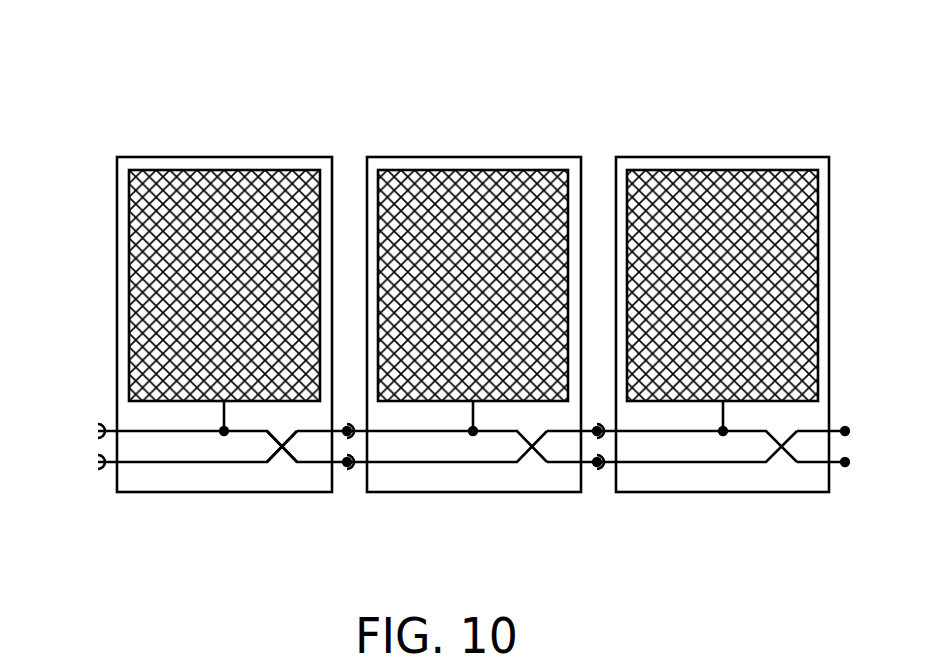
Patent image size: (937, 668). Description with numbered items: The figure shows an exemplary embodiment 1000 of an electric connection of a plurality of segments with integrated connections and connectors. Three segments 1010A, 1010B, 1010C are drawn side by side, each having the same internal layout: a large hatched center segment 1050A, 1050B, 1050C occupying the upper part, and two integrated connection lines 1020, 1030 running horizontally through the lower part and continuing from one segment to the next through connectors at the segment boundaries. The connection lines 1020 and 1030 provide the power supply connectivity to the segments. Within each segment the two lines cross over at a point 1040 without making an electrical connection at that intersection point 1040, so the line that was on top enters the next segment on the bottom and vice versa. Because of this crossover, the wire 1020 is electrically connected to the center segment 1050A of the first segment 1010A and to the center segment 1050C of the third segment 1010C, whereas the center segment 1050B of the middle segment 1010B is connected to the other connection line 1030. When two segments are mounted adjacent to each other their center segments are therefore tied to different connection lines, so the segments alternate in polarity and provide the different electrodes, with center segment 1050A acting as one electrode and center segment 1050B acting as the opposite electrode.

The embodiment of an electric connection of a plurality of segments 1000 is at (112, 91).
The segment 1010A is at (190, 492).
The segment 1010B is at (475, 492).
The segment 1010C is at (725, 492).
The connection line 1020 is at (92, 431).
The connection line 1030 is at (92, 462).
The crossover point 1040 is at (283, 458).
The center segment 1050A is at (226, 195).
The center segment 1050B is at (475, 195).
The center segment 1050C is at (724, 195).